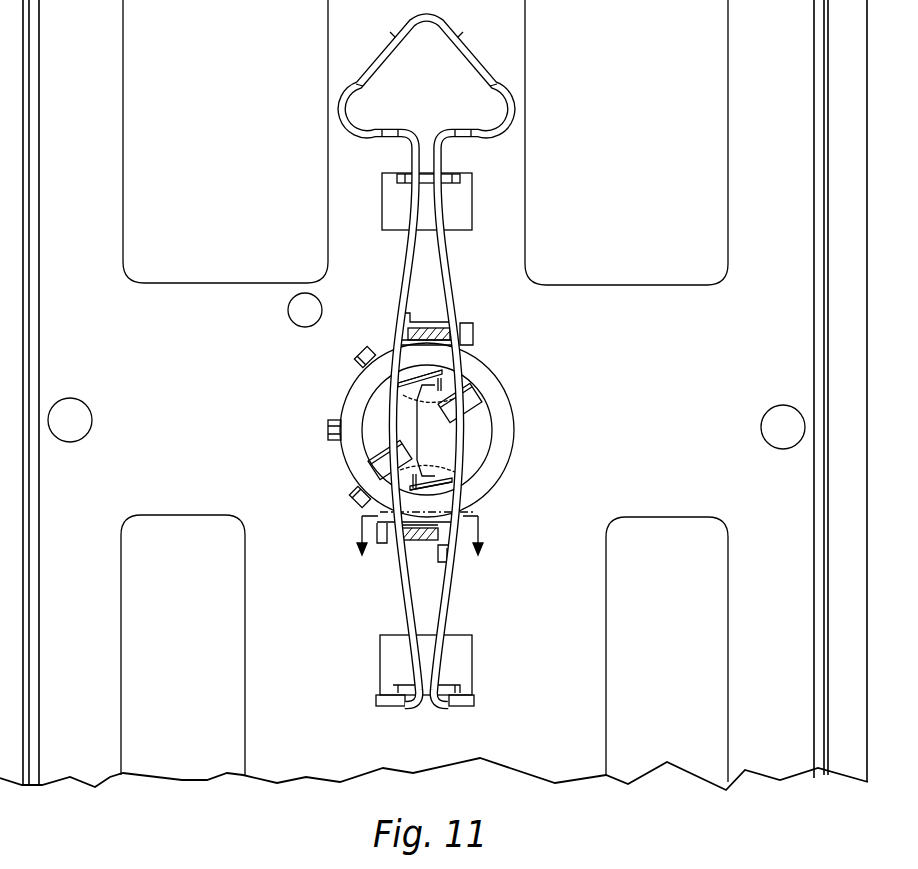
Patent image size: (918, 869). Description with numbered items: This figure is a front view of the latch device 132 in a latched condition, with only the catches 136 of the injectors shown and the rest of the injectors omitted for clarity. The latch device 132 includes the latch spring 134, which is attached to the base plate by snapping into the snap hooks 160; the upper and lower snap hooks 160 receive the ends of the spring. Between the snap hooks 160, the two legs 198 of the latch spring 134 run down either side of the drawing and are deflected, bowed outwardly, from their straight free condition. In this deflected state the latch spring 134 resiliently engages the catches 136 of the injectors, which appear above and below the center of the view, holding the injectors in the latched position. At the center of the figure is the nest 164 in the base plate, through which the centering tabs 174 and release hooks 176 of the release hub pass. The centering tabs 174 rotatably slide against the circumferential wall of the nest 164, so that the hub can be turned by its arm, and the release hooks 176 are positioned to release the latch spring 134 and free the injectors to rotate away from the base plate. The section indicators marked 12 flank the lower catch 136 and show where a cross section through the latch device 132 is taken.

The section line of FIG. 12 is at (420, 550).
The latch device 132 is at (325, 358).
The latch spring 134 is at (411, 157).
The catches 136 is at (425, 322).
The snap hooks 160 is at (458, 177).
The nest 164 is at (432, 434).
The centering tabs 174 is at (398, 397).
The release hooks 176 is at (478, 402).
The legs 198 is at (394, 297).